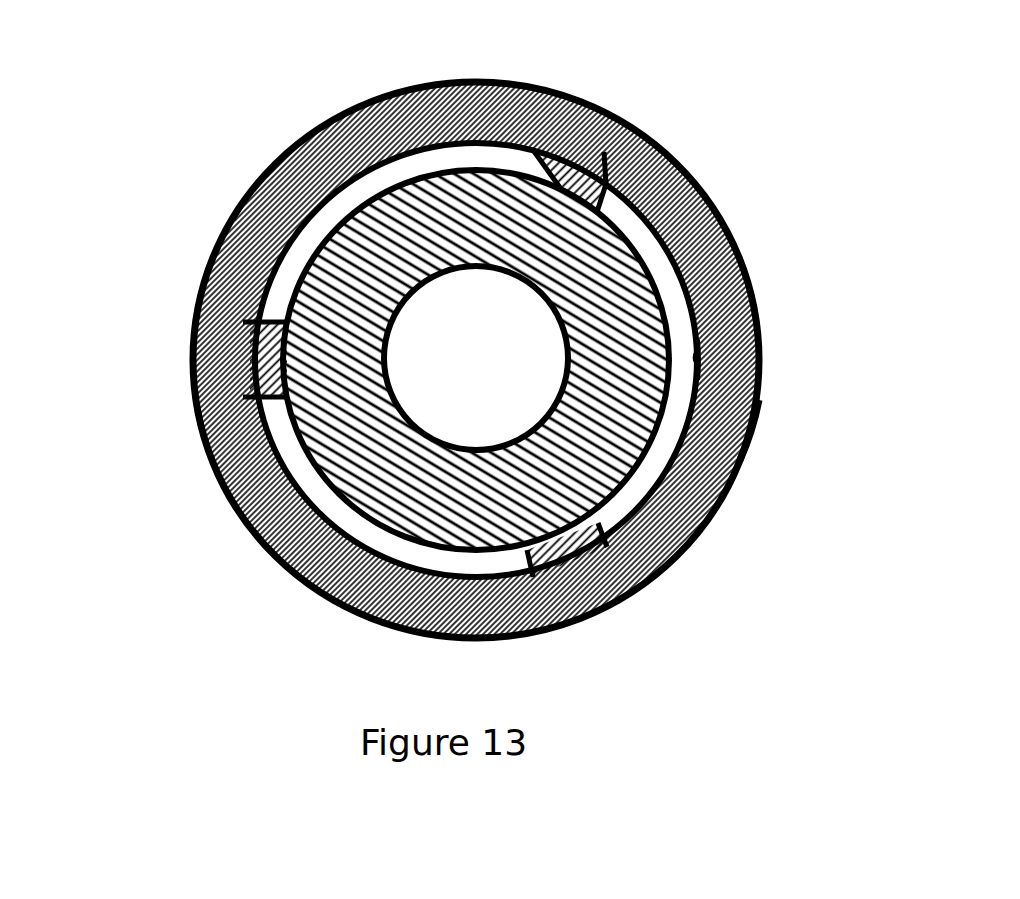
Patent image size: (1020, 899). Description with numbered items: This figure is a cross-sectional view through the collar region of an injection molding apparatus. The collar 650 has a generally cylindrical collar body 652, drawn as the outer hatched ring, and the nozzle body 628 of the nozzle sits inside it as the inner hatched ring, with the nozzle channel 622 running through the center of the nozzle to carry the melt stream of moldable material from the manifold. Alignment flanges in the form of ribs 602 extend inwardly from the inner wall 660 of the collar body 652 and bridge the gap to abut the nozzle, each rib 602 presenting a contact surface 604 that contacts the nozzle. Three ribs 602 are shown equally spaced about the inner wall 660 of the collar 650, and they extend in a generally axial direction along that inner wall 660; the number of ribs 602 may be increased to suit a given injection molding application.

The rib 602 is at (637, 127).
The contact surface 604 is at (250, 373).
The nozzle channel 622 is at (420, 388).
The nozzle body 628 is at (383, 183).
The collar 650 is at (741, 250).
The collar body 652 is at (754, 430).
The inner wall 660 is at (763, 350).